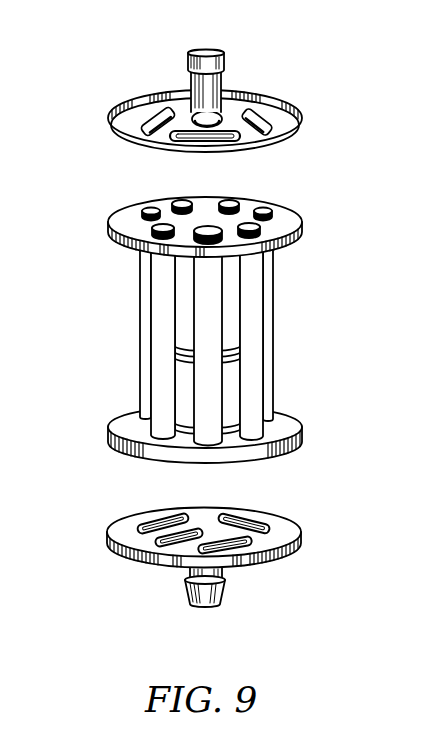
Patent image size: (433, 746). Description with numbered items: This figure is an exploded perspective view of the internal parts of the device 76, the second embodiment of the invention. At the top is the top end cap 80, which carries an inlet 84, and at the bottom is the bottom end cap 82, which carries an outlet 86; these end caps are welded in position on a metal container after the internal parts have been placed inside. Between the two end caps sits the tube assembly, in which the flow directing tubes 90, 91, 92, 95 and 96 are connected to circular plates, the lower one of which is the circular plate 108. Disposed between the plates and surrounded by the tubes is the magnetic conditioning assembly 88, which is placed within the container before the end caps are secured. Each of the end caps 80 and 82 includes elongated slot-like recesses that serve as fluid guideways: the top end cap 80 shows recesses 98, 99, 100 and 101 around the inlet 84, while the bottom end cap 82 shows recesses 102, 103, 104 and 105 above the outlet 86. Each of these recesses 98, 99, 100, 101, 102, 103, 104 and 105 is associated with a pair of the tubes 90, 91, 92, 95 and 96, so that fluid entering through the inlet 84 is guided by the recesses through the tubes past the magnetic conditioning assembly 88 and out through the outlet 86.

The device 76 is at (217, 330).
The top end cap 80 is at (300, 110).
The bottom end cap 82 is at (230, 563).
The inlet 84 is at (198, 112).
The outlet 86 is at (207, 575).
The magnetic conditioning assembly 88 is at (185, 338).
The flow directing tube 90 is at (204, 299).
The flow directing tube 91 is at (250, 323).
The flow directing tube 92 is at (265, 363).
The flow directing tube 95 is at (147, 267).
The flow directing tube 96 is at (162, 307).
The slot-like recess 98 is at (212, 113).
The slot-like recess 99 is at (267, 127).
The slot-like recess 100 is at (200, 137).
The slot-like recess 101 is at (153, 118).
The slot-like recess 102 is at (243, 548).
The slot-like recess 103 is at (257, 523).
The slot-like recess 104 is at (143, 523).
The slot-like recess 105 is at (170, 542).
The circular plate 108 is at (127, 427).